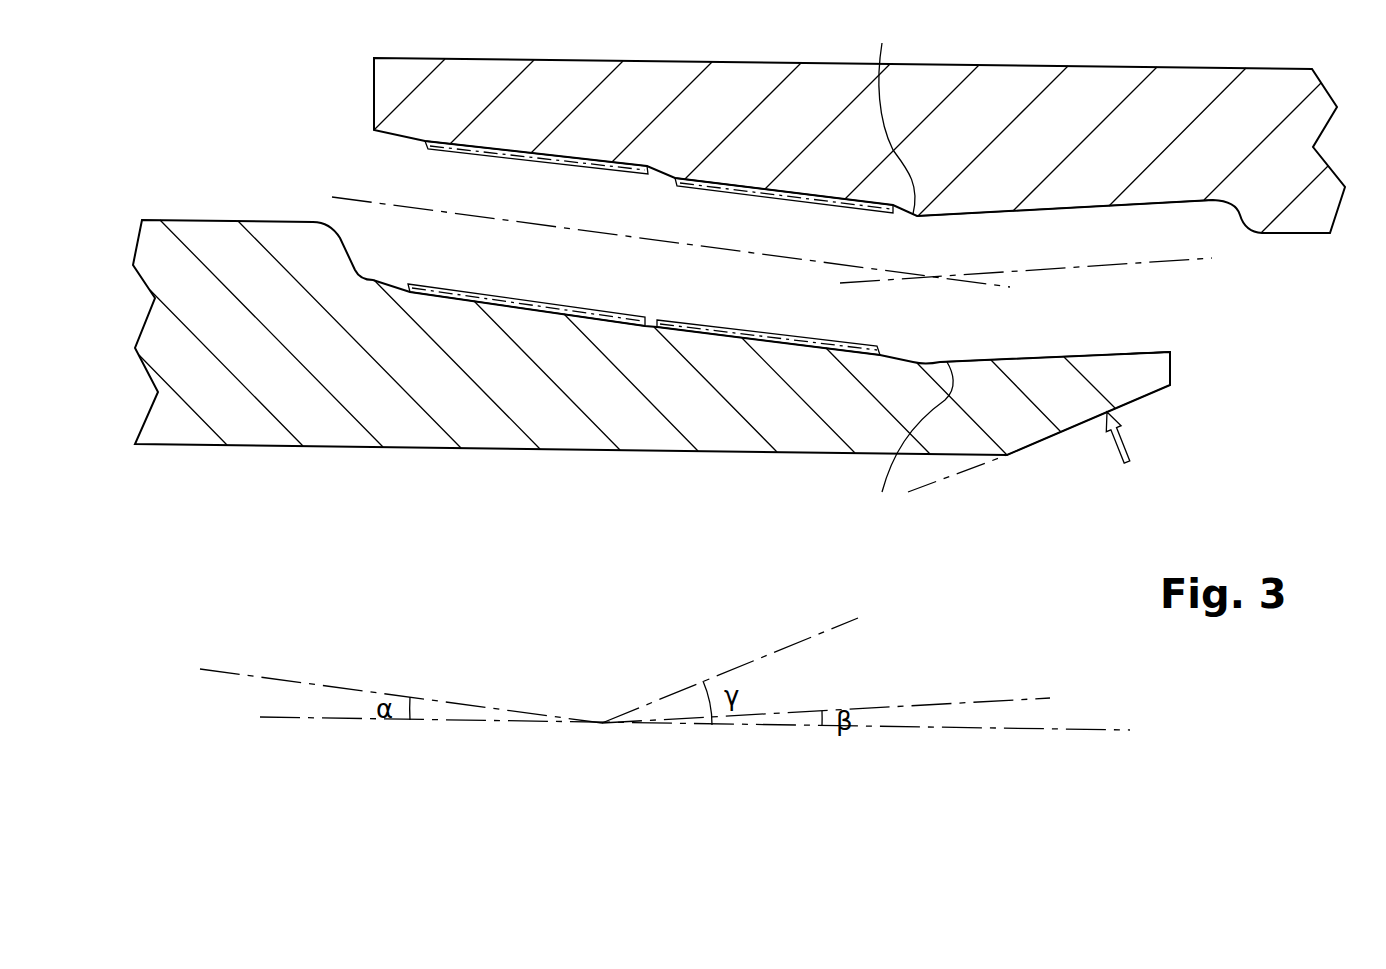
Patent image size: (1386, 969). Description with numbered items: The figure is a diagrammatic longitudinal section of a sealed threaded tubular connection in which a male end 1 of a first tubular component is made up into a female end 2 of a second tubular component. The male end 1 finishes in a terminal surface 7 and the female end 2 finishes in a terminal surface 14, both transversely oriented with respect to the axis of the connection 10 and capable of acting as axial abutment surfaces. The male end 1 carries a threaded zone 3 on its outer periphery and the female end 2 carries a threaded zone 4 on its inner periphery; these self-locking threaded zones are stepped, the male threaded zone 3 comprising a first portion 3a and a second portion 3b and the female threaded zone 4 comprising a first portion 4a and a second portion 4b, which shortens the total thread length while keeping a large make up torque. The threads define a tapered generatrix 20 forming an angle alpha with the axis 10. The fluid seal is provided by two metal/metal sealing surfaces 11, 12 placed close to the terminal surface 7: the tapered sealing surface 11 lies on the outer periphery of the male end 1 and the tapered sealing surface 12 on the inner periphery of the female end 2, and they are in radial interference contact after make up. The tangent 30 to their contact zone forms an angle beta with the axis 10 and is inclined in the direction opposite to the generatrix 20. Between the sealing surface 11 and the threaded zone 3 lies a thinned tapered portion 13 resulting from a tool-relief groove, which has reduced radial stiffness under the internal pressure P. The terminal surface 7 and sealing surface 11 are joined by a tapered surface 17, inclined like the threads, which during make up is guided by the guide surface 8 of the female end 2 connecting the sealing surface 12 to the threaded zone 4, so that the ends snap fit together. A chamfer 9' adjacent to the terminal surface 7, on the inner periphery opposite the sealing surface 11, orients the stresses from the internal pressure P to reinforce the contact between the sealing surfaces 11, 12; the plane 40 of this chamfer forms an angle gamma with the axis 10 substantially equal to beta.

The male end 1 is at (393, 417).
The female end 2 is at (563, 77).
The threaded zone 3 is at (644, 342).
The first portion 3a is at (553, 308).
The first portion 3b is at (768, 344).
The threaded zone 4 is at (659, 202).
The second portion 4a is at (567, 167).
The second portion 4b is at (784, 202).
The terminal surface 7 is at (1173, 387).
The guide surface 8 is at (894, 116).
The chamfer 9' is at (1088, 458).
The axis of the connection 10 is at (1027, 730).
The sealing surface 11 is at (1045, 355).
The sealing surface 12 is at (1083, 203).
The thinned tapered portion 13 is at (909, 443).
The terminal surface 14 is at (373, 93).
The tapered surface 17 is at (1153, 353).
The tapered generatrix 20 is at (385, 204).
The tangent 30 is at (1170, 262).
The inclined plane of surface 9' (angle gamma) 40 is at (957, 471).
The internal pressure P is at (1126, 437).